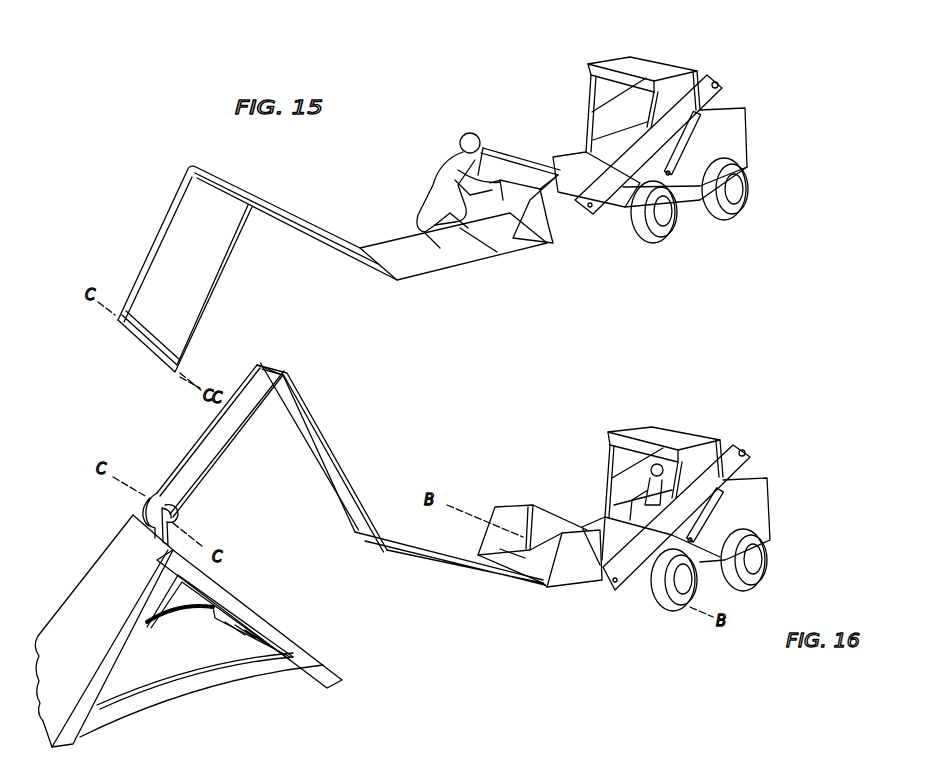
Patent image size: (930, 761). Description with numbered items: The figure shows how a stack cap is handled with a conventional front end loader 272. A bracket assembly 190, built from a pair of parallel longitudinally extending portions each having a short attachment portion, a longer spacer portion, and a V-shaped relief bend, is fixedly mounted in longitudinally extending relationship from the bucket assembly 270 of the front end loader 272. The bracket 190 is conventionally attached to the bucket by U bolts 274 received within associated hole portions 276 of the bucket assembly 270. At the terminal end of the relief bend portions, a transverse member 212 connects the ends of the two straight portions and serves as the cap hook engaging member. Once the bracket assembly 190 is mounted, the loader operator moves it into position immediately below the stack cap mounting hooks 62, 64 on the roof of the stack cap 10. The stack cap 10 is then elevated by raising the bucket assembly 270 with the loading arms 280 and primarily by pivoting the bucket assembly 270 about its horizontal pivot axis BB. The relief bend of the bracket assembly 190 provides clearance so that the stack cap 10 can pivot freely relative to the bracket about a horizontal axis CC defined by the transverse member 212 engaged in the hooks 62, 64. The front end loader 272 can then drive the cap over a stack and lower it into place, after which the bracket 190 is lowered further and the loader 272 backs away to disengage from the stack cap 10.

In FIG. 16, the stack cap 10 is at (245, 595).
In FIG. 16, the roof hook 62 is at (176, 505).
In FIG. 16, the roof hook 64 is at (151, 490).
In FIG. 15, the loader bracket 190 is at (282, 202).
In FIG. 16, the loader bracket 190 is at (345, 467).
In FIG. 16, the transverse member 212 is at (168, 552).
In FIG. 15, the bucket assembly 270 is at (500, 145).
In FIG. 16, the bucket assembly 270 is at (543, 504).
In FIG. 15, the front end loader 272 is at (650, 53).
In FIG. 16, the front end loader 272 is at (672, 423).
In FIG. 15, the U bolts 274 is at (505, 182).
In FIG. 15, the hole portions 276 is at (517, 195).
In FIG. 15, the loading arms 280 is at (575, 123).
In FIG. 16, the loading arms 280 is at (727, 447).